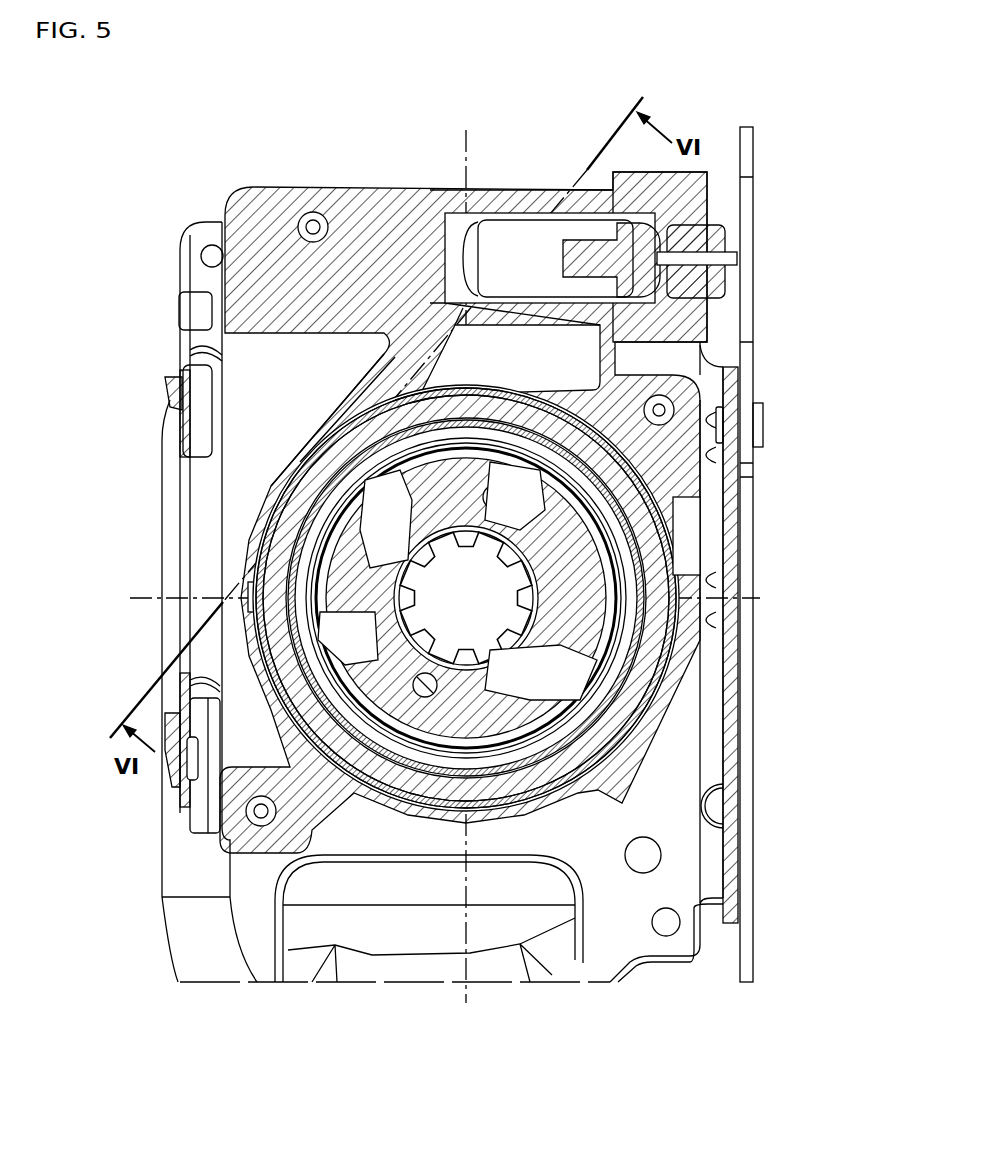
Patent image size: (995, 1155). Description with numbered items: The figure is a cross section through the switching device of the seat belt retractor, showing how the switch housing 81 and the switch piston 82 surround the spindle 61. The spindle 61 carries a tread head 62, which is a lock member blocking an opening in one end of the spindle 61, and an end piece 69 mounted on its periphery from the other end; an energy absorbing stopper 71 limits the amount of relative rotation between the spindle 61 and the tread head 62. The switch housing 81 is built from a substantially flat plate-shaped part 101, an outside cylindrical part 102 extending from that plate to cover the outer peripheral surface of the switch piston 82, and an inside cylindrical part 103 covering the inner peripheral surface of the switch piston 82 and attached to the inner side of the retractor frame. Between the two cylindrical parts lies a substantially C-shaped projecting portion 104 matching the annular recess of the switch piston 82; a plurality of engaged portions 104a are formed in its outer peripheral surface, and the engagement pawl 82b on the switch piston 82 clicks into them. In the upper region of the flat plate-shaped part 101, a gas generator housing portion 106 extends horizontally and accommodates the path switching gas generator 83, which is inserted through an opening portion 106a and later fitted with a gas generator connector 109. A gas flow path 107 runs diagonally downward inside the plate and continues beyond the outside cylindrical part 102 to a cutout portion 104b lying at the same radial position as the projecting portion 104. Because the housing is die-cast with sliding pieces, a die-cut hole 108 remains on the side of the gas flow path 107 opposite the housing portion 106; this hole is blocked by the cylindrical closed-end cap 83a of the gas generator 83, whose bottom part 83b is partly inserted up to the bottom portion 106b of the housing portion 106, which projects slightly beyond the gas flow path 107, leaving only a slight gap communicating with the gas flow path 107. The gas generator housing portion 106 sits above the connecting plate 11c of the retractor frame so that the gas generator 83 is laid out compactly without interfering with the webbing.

The switch housing 81 is at (232, 190).
The switch piston 82 is at (350, 797).
The engagement pawl 82b is at (258, 592).
The path switching gas generator 83 is at (700, 270).
The cap 83a is at (555, 212).
The bottom part 83b is at (479, 218).
The spindle 61 is at (345, 636).
The tread head 62 is at (345, 528).
The end piece 69 is at (645, 535).
The energy absorbing stopper 71 is at (328, 572).
The substantially flat plate-shaped part 101 is at (677, 483).
The outside cylindrical part 102 is at (622, 722).
The inside cylindrical part 103 is at (582, 787).
The substantially C-shaped projecting portion 104 is at (612, 758).
The engaged portions 104a is at (290, 602).
The cutout portion 104b is at (332, 463).
The gas generator housing portion 106 is at (440, 205).
The opening portion 106a is at (713, 305).
The bottom portion 106b is at (433, 275).
The gas flow path 107 is at (402, 365).
The die-cut hole 108 is at (545, 210).
The gas generator connector 109 is at (712, 252).
The connecting plate 11c is at (736, 668).